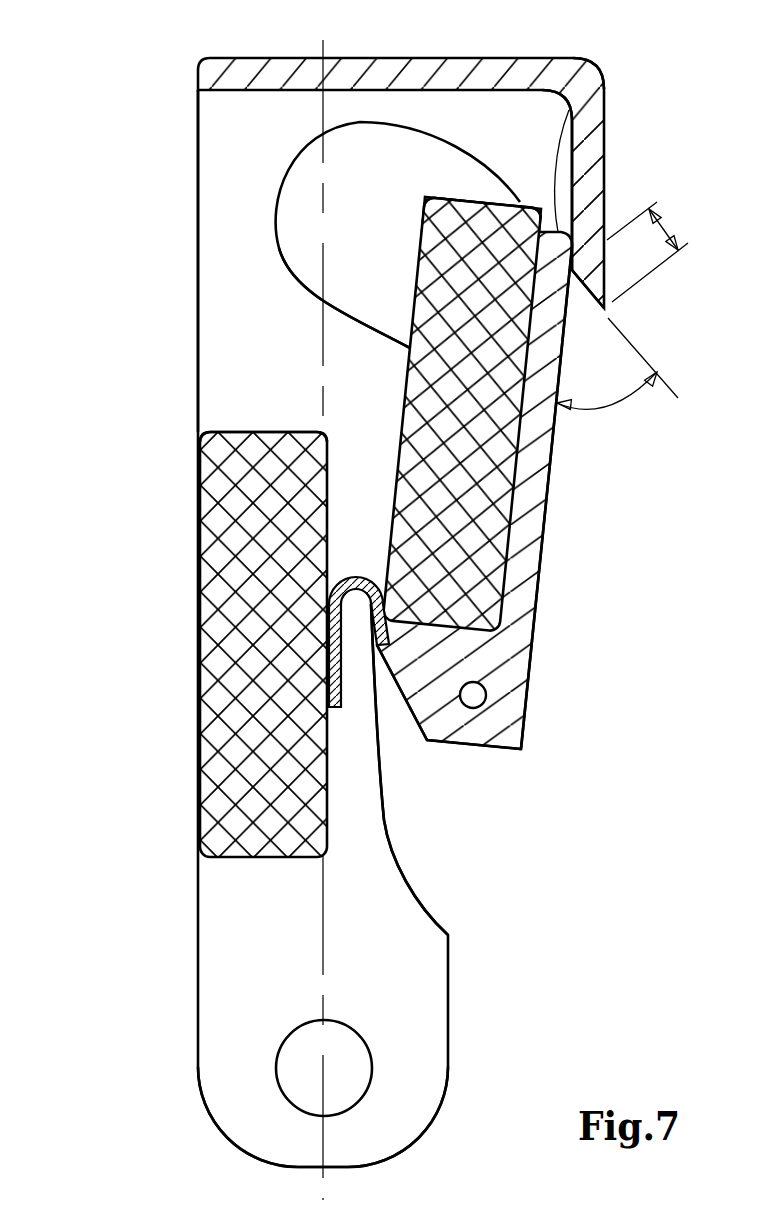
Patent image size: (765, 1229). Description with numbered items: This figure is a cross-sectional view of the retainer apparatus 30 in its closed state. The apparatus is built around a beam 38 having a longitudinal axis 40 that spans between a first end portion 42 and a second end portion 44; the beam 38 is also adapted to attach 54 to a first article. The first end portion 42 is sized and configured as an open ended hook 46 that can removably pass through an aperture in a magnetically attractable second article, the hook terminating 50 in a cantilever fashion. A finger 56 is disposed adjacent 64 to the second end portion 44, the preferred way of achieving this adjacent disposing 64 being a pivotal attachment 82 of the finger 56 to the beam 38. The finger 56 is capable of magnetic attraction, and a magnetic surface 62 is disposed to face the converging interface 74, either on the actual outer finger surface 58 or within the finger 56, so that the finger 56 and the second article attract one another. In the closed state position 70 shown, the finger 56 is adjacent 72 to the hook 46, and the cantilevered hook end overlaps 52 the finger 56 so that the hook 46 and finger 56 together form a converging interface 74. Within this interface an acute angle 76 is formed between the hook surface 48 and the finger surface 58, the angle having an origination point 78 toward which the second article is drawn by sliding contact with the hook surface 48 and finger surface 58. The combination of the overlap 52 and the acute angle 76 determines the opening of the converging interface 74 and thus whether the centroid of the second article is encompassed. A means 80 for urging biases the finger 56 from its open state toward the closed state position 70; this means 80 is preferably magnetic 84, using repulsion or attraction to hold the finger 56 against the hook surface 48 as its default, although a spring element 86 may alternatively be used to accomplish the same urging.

The retainer apparatus 30 is at (157, 151).
The beam 38 is at (196, 935).
The longitudinal axis 40 is at (323, 47).
The first end portion 42 is at (215, 203).
The second end portion 44 is at (228, 1013).
The open ended hook 46 is at (530, 122).
The hook surface 48 is at (540, 278).
The terminating (end of hook) 50 is at (606, 310).
The overlap 52 is at (672, 225).
The attach (attachment of beam to first article) 54 is at (276, 1070).
The finger 56 is at (483, 503).
The finger surface 58 is at (550, 480).
The magnetic surface 62 is at (530, 650).
The adjacent disposing (of finger to second end portion) 64 is at (474, 708).
The closed state position 70 is at (616, 74).
The adjacent (finger to hook) 72 is at (605, 80).
The converging interface 74 is at (568, 258).
The acute angle 76 is at (610, 408).
The origination point 78 is at (425, 198).
The means for urging 80 is at (270, 648).
The pivotal attachment 82 is at (481, 703).
The magnetic (repulsion or attraction) 84 is at (248, 527).
The spring element 86 is at (487, 748).